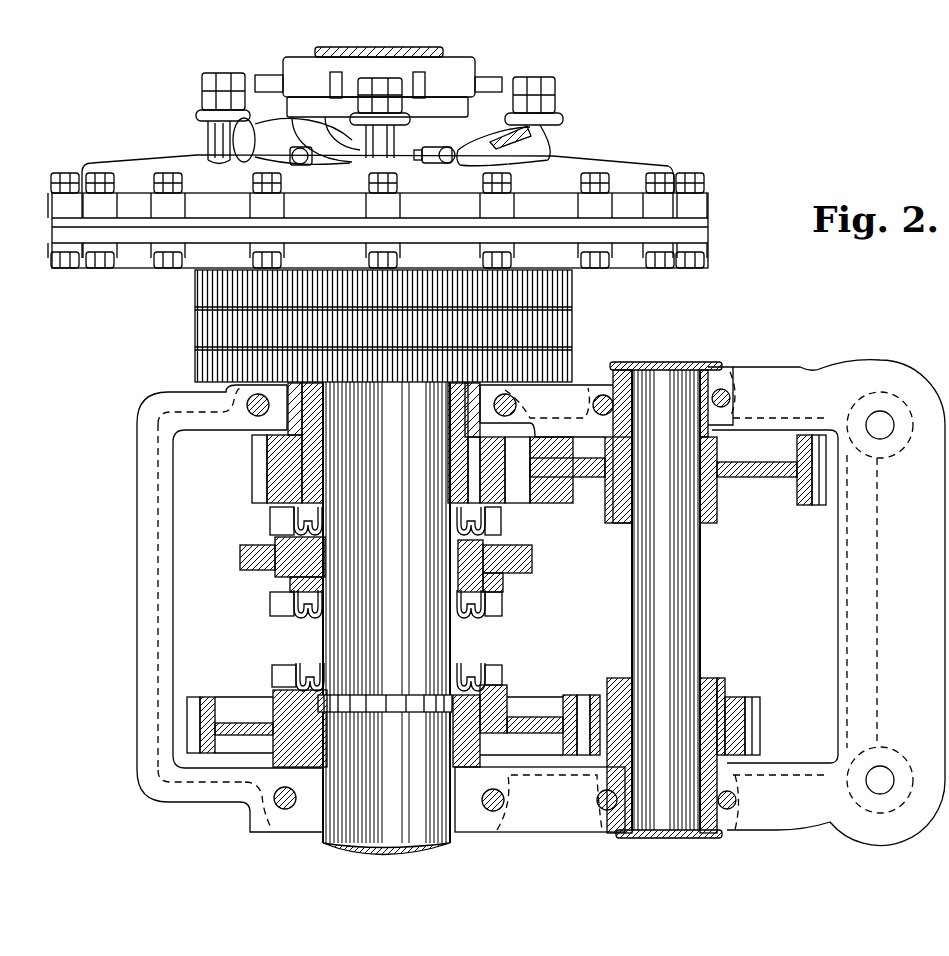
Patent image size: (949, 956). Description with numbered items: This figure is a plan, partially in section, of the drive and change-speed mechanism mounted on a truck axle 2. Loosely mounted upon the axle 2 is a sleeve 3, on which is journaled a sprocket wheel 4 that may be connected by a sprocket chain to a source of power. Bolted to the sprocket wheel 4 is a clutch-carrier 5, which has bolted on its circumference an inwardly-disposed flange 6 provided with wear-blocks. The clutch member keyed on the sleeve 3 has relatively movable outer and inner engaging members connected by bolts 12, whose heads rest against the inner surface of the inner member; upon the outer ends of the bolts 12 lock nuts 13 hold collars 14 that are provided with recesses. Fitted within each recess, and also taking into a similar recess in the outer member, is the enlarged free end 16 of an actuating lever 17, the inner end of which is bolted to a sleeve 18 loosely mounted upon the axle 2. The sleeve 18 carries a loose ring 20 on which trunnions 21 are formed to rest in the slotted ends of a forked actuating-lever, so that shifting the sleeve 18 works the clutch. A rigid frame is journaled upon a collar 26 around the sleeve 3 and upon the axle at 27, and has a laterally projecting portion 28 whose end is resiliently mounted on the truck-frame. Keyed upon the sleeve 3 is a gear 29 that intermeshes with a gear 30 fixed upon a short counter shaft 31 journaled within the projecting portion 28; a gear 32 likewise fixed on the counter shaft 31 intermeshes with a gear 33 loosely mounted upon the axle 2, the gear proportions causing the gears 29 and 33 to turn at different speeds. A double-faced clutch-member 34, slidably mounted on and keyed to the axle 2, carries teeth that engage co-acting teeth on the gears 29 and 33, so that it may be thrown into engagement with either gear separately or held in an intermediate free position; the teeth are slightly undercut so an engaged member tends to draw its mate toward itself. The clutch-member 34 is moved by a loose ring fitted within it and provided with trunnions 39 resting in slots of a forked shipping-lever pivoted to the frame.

The axle 2 is at (455, 648).
The sleeve 3 is at (313, 450).
The sprocket wheel 4 is at (540, 330).
The clutch-carrier 5 is at (135, 262).
The inwardly-disposed flange 6 is at (135, 178).
The bolts 12 is at (210, 140).
The lock nuts 13 is at (540, 105).
The collars 14 is at (402, 120).
The enlarged free end 16 is at (548, 142).
The actuating lever 17 is at (348, 160).
The sleeve 18 is at (318, 138).
The loose ring 20 is at (292, 80).
The trunnions 21 is at (262, 82).
The collar 26 is at (507, 394).
The axle journal 27 is at (478, 820).
The laterally projecting portion 28 is at (858, 632).
The gear 29 is at (262, 490).
The gear 30 is at (752, 490).
The counter shaft 31 is at (683, 608).
The gear 32 is at (740, 727).
The gear 33 is at (232, 703).
The double-faced clutch-member 34 is at (470, 553).
The trunnions 39 is at (523, 570).